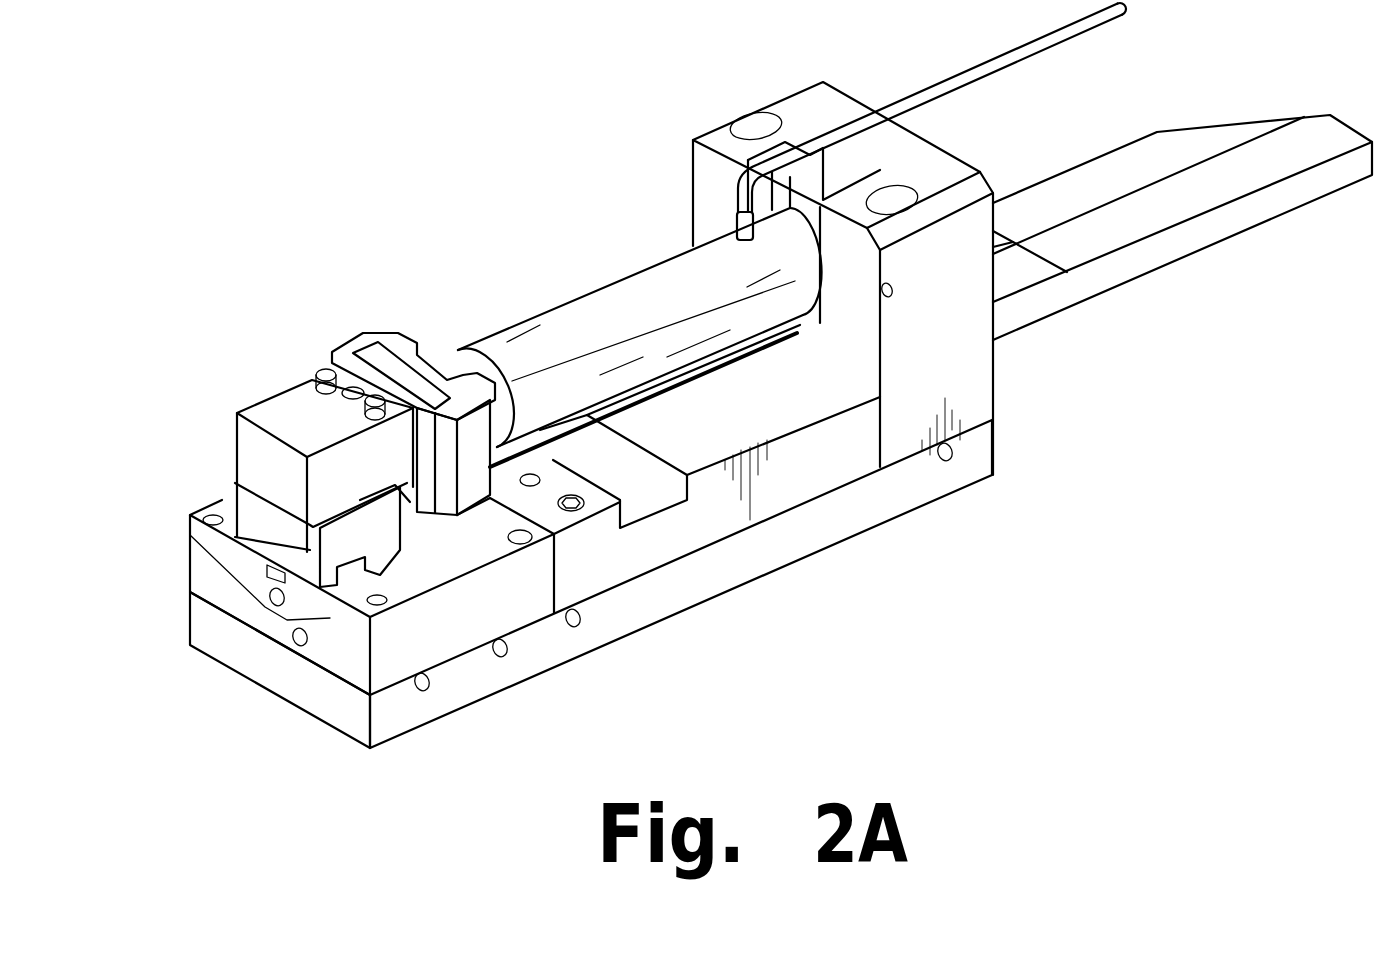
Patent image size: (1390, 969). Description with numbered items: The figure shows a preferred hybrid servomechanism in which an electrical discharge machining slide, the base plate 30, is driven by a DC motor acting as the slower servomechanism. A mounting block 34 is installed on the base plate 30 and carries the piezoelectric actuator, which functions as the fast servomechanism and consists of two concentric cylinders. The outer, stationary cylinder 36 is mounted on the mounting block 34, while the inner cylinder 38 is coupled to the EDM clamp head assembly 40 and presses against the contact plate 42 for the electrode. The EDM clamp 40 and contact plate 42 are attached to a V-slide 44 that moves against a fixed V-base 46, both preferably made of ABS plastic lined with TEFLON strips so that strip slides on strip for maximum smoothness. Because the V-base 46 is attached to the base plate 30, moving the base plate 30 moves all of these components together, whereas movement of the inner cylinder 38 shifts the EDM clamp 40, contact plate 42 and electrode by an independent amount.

The base plate 30 is at (337, 722).
The mounting block 34 is at (805, 92).
The outer cylinder 36 is at (615, 280).
The inner cylinder 38 is at (450, 378).
The EDM clamp head assembly 40 is at (275, 392).
The contact plate 42 is at (290, 623).
The V-slide 44 is at (393, 617).
The V-base 46 is at (463, 633).